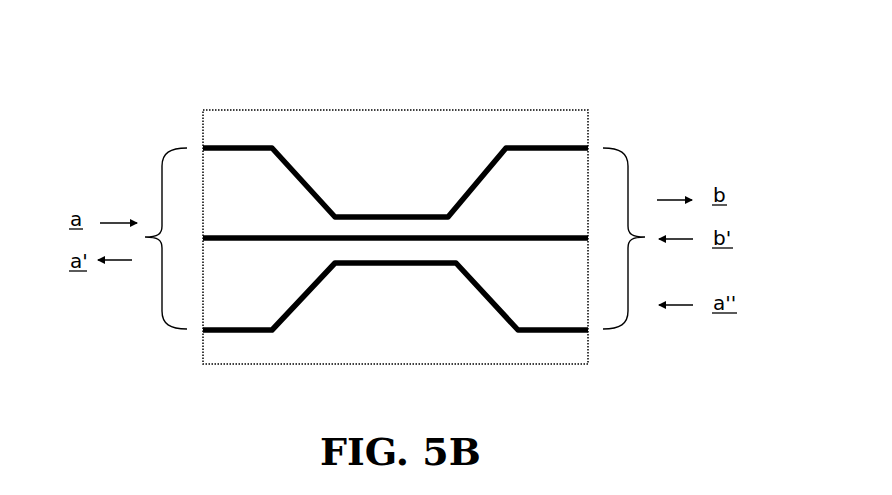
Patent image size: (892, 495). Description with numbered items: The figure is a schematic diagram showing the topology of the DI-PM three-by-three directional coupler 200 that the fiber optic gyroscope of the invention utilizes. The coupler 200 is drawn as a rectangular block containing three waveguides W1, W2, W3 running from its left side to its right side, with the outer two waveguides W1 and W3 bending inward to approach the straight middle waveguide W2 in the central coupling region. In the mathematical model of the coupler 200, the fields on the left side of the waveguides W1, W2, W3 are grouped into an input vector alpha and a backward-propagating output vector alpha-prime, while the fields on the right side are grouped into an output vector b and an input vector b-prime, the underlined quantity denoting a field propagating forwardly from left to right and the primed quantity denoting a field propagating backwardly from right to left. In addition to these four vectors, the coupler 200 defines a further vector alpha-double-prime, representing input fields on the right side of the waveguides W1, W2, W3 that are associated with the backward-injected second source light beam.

The DI-PM 3×3 directional coupler 200 is at (342, 107).
The first waveguide W1 is at (395, 171).
The second waveguide W2 is at (395, 224).
The third waveguide W3 is at (395, 296).